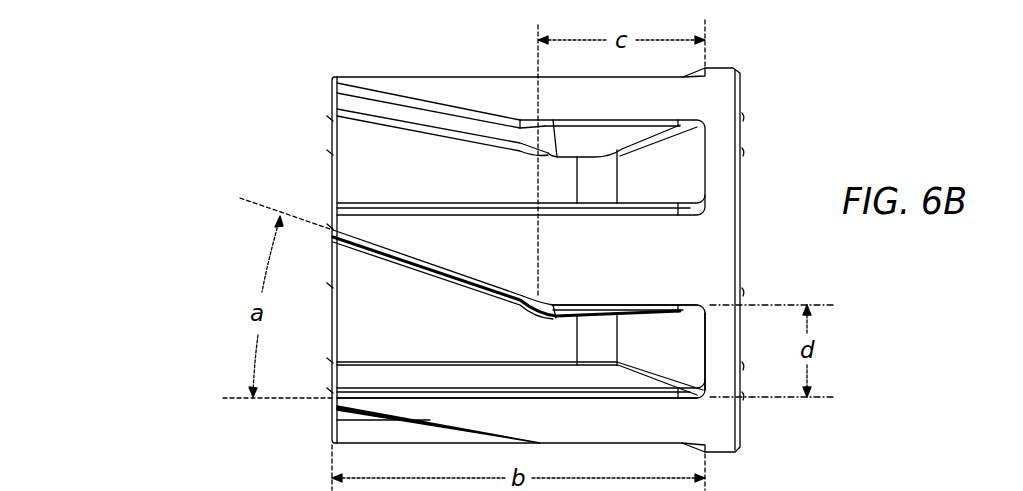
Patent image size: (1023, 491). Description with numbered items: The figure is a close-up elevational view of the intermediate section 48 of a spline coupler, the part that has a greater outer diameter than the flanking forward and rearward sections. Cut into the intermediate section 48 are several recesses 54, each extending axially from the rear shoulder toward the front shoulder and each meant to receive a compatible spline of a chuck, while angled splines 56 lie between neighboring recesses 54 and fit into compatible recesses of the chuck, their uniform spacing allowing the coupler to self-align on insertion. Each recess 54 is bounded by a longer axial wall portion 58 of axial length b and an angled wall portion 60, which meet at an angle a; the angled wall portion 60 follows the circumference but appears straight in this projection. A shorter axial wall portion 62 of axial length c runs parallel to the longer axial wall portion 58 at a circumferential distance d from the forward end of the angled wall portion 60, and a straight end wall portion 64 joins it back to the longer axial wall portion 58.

The intermediate section 48 is at (747, 85).
The recess 54 is at (367, 153).
The angled spline 56 is at (400, 76).
The longer axial wall portion 58 is at (480, 400).
The angled wall portion 60 is at (417, 258).
The shorter axial wall portion 62 is at (657, 303).
The end wall portion 64 is at (707, 328).